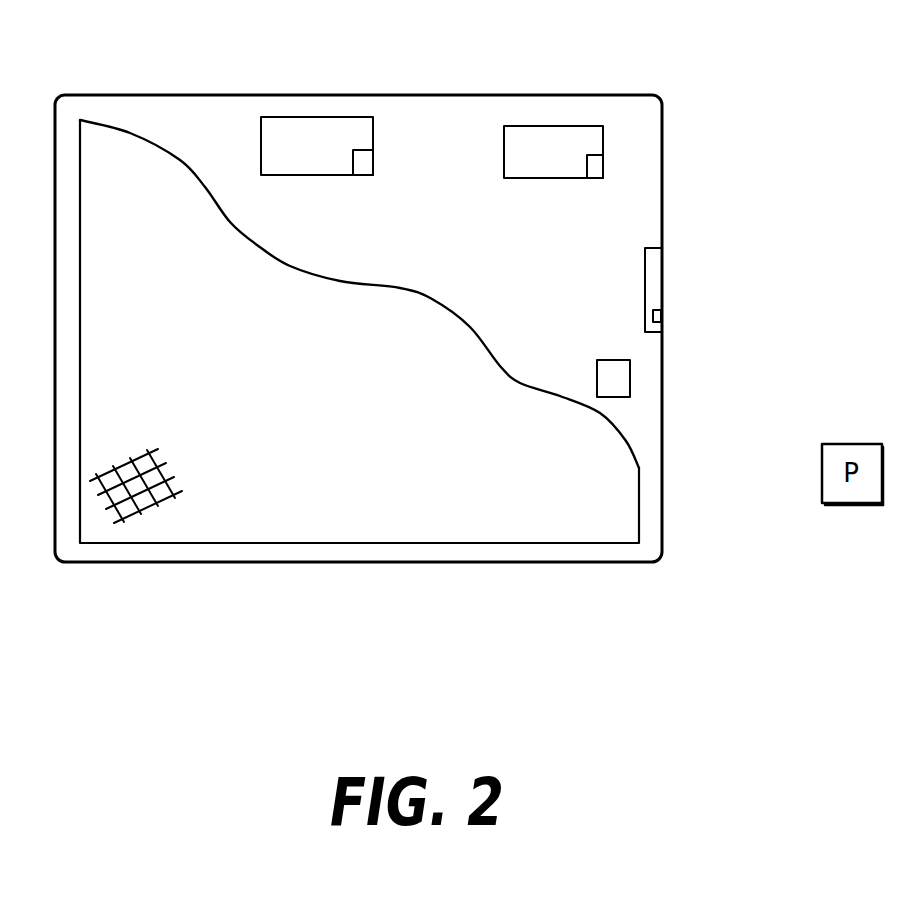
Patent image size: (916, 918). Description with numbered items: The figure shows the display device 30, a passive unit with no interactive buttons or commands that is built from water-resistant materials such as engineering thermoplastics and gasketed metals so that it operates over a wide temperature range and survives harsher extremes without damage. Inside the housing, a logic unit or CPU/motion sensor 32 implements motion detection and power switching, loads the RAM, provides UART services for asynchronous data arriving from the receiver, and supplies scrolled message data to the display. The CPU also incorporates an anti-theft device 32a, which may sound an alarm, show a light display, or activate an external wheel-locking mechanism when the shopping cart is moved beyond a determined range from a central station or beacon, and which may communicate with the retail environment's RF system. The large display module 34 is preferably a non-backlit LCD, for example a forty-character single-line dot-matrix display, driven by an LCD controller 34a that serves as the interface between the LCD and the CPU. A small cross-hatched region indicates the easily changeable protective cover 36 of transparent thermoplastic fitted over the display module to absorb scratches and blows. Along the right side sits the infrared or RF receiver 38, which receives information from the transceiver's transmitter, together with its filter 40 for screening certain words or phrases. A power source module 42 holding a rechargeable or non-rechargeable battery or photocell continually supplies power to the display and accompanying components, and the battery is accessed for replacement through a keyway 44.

The display device 30 is at (541, 584).
The CPU/motion sensor 32 is at (590, 126).
The anti-theft device 32a is at (597, 170).
The display module 34 is at (255, 522).
The display controller 34a is at (620, 375).
The protective cover 36 is at (128, 512).
The infrared (or RF) receiver 38 is at (658, 278).
The filter 40 is at (657, 317).
The power source module 42 is at (316, 116).
The keyway 44 is at (367, 162).